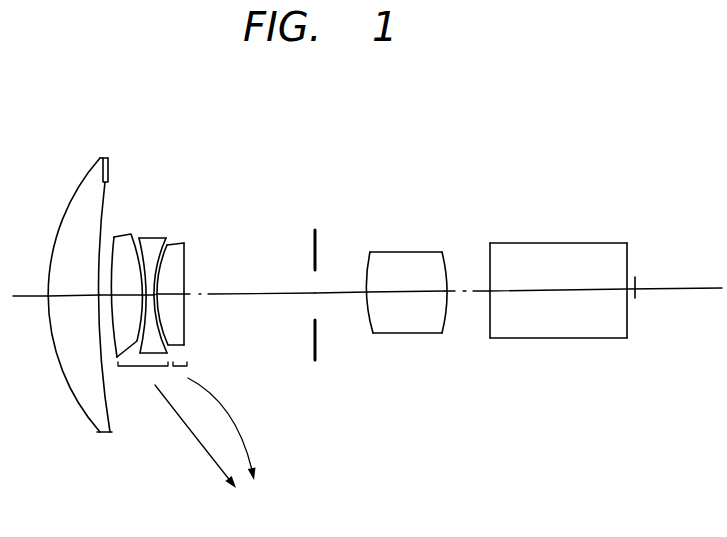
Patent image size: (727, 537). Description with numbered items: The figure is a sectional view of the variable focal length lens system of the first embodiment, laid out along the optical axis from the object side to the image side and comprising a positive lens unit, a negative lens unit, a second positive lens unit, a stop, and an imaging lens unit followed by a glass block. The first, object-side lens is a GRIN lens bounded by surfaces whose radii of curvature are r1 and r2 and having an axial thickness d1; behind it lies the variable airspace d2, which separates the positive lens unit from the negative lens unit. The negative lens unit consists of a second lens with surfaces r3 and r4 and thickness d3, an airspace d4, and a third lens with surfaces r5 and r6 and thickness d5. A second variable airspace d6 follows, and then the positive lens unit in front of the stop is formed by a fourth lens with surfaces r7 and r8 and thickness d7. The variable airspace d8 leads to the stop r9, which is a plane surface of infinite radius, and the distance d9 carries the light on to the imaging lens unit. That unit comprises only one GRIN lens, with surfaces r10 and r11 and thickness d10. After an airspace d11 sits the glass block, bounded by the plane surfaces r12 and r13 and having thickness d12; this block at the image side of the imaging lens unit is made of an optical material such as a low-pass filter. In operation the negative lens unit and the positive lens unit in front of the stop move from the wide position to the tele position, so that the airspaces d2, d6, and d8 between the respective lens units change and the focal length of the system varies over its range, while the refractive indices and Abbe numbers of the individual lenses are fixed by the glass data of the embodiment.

The radius of curvature of first lens surface r1 is at (84, 178).
The radius of curvature of second lens surface r2 is at (108, 158).
The radius of curvature of third lens surface r3 is at (114, 238).
The radius of curvature of fourth lens surface r4 is at (129, 238).
The radius of curvature of fifth lens surface r5 is at (147, 240).
The radius of curvature of sixth lens surface r6 is at (157, 238).
The radius of curvature of seventh lens surface r7 is at (174, 244).
The radius of curvature of eighth lens surface r8 is at (186, 252).
The stop surface r9 is at (312, 242).
The radius of curvature of tenth lens surface r10 is at (368, 262).
The radius of curvature of eleventh lens surface r11 is at (443, 262).
The radius of curvature of twelfth surface r12 is at (490, 258).
The radius of curvature of thirteenth surface r13 is at (627, 252).
The thickness of first lens d1 is at (72, 296).
The airspace between first and second lenses d2 is at (100, 296).
The thickness of second lens d3 is at (98, 362).
The airspace between second and third lenses d4 is at (140, 293).
The thickness of third lens d5 is at (156, 325).
The airspace between third and fourth lenses d6 is at (155, 294).
The thickness of fourth lens d7 is at (175, 297).
The airspace between fourth lens and stop d8 is at (262, 294).
The airspace between stop and imaging lens d9 is at (337, 293).
The thickness of imaging lens d10 is at (402, 292).
The airspace between imaging lens and glass block d11 is at (457, 292).
The thickness of glass block d12 is at (555, 291).